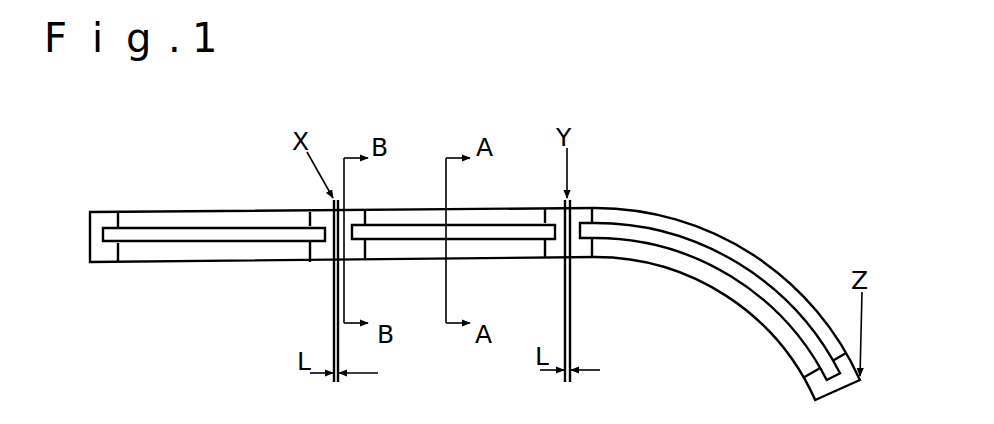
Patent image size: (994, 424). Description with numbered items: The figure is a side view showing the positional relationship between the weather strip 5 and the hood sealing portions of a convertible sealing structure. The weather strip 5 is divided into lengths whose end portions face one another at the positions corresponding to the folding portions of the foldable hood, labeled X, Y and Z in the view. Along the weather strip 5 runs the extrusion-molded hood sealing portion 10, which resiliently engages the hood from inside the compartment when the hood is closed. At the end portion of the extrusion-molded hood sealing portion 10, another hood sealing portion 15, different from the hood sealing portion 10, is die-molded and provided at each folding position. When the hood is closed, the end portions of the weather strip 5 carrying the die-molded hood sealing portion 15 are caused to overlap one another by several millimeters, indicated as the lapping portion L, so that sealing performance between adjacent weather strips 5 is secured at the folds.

The weather strip 5 is at (191, 262).
The hood sealing portion 10 is at (203, 222).
The another hood sealing portion 15 is at (96, 212).